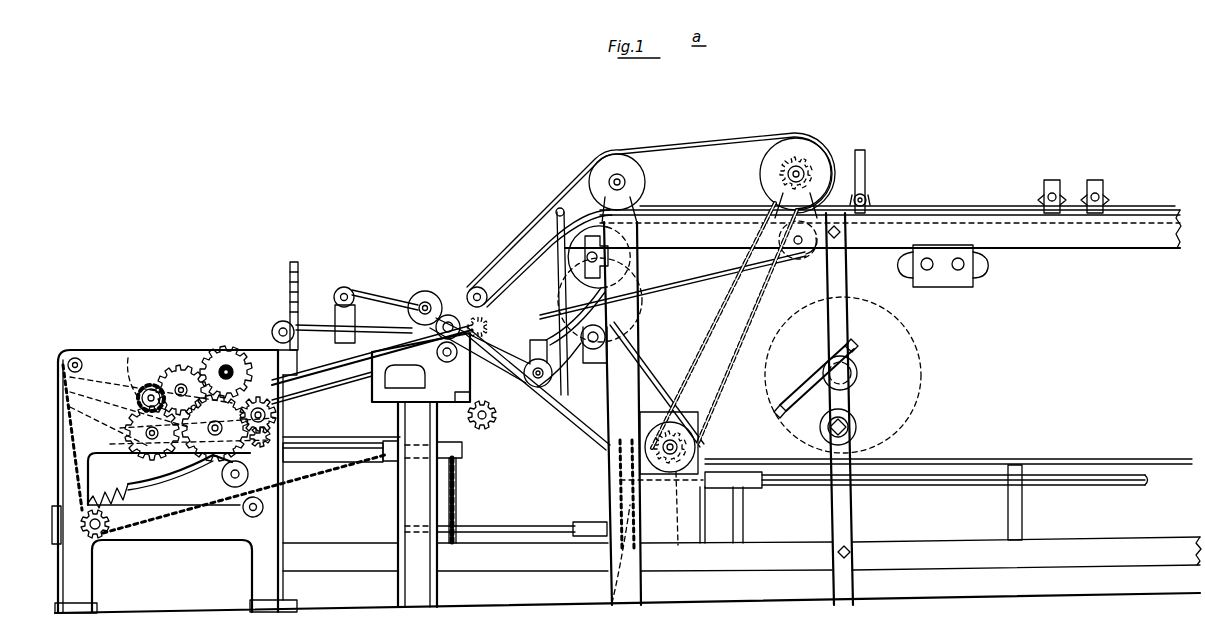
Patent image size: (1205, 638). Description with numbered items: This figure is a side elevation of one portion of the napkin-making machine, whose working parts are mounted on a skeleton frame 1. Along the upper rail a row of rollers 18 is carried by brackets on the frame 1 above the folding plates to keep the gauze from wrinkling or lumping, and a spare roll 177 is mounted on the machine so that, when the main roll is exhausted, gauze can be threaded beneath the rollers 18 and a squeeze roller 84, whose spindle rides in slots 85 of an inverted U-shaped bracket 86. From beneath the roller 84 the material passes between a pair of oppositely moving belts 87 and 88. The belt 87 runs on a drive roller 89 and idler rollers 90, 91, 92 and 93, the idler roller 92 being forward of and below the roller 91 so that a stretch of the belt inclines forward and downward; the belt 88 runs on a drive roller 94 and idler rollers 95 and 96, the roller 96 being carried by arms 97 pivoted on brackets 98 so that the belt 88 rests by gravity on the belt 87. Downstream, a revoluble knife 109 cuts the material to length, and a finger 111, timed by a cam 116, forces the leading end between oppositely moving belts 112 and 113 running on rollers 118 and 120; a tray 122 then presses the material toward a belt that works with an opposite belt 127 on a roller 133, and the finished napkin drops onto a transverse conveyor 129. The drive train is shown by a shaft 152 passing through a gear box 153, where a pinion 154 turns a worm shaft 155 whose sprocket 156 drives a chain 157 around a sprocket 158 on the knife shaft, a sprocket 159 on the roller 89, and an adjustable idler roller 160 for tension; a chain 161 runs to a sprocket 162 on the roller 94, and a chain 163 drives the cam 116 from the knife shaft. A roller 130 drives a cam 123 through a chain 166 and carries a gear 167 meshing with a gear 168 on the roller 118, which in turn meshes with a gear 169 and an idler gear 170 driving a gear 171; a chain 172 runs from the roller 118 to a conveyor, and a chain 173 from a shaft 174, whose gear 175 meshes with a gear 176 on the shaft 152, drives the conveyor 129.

The skeleton frame 1 is at (1078, 236).
The rollers 18 is at (1094, 180).
The squeeze roller 84 is at (868, 198).
The slots 85 is at (866, 182).
The inverted U-shaped bracket 86 is at (852, 180).
The belt 87 is at (667, 290).
The belt 88 is at (700, 143).
The drive roller 89 is at (630, 313).
The idler roller 90 is at (800, 250).
The idler roller 91 is at (578, 240).
The idler roller 92 is at (490, 318).
The idler roller 93 is at (640, 372).
The drive roller 94 is at (798, 140).
The idler roller 95 is at (637, 186).
The idler roller 96 is at (468, 292).
The arms 97 is at (512, 246).
The brackets 98 is at (560, 298).
The revoluble knife 109 is at (425, 305).
The finger 111 is at (296, 290).
The belt 112 is at (360, 385).
The belt 113 is at (262, 340).
The cam 116 is at (336, 300).
The roller 118 is at (178, 385).
The roller 120 is at (224, 362).
The tray 122 is at (90, 372).
The cam 123 is at (240, 488).
The belt 127 is at (306, 376).
The conveyor 129 is at (350, 458).
The roller 130 is at (150, 480).
The roller 133 is at (290, 410).
The shaft 152 is at (950, 476).
The gear box 153 is at (688, 519).
The pinion 154 is at (682, 518).
The worm shaft 155 is at (696, 444).
The sprocket 156 is at (686, 432).
The chain 157 is at (545, 412).
The sprocket 158 is at (430, 292).
The sprocket 159 is at (596, 350).
The adjustable idler roller 160 is at (530, 345).
The chain 161 is at (763, 297).
The sprocket 162 is at (780, 173).
The chain 163 is at (364, 288).
The chain 166 is at (243, 509).
The gear 167 is at (128, 432).
The gear 168 is at (183, 370).
The gear 169 is at (230, 350).
The idler gear 170 is at (222, 474).
The gear 171 is at (300, 428).
The chain 172 is at (125, 355).
The chain 173 is at (458, 488).
The shaft 174 is at (525, 540).
The gear 175 is at (615, 570).
The gear 176 is at (612, 466).
The roll 177 is at (915, 350).